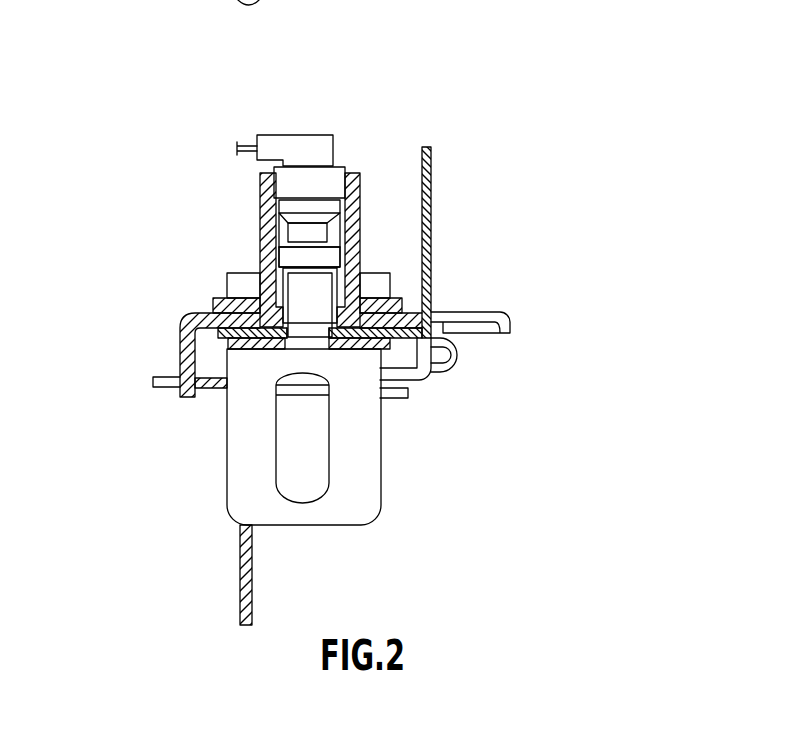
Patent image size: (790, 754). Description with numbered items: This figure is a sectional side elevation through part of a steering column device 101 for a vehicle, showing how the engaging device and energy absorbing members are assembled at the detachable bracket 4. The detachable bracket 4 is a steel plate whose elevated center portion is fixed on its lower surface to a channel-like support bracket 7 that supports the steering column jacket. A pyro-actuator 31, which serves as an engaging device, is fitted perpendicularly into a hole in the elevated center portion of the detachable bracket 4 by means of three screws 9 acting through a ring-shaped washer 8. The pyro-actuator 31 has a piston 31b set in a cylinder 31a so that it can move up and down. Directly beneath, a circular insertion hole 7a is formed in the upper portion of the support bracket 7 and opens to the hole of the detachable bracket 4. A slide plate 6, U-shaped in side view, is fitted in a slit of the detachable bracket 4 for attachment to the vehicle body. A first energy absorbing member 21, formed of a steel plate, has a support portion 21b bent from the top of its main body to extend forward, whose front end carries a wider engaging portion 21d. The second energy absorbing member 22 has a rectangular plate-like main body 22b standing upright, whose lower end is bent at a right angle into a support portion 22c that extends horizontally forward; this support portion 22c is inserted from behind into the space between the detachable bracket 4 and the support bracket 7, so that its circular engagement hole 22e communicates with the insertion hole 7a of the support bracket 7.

The steering column device 101 is at (526, 139).
The pyro-actuator 31 is at (395, 370).
The cylinder 31a is at (350, 235).
The piston 31b is at (283, 263).
The screws 9 is at (227, 280).
The ring-shaped washer 8 is at (213, 305).
The detachable bracket 4 is at (180, 342).
The second energy absorbing member 22 is at (395, 364).
The main body 22b is at (433, 252).
The support portion 22c is at (393, 340).
The engagement hole 22e is at (307, 336).
The slide plate 6 is at (457, 353).
The support bracket 7 is at (395, 390).
The insertion hole 7a is at (317, 344).
The first energy absorbing member 21 is at (395, 390).
The support portion 21b is at (203, 388).
The engaging portion 21d is at (153, 382).